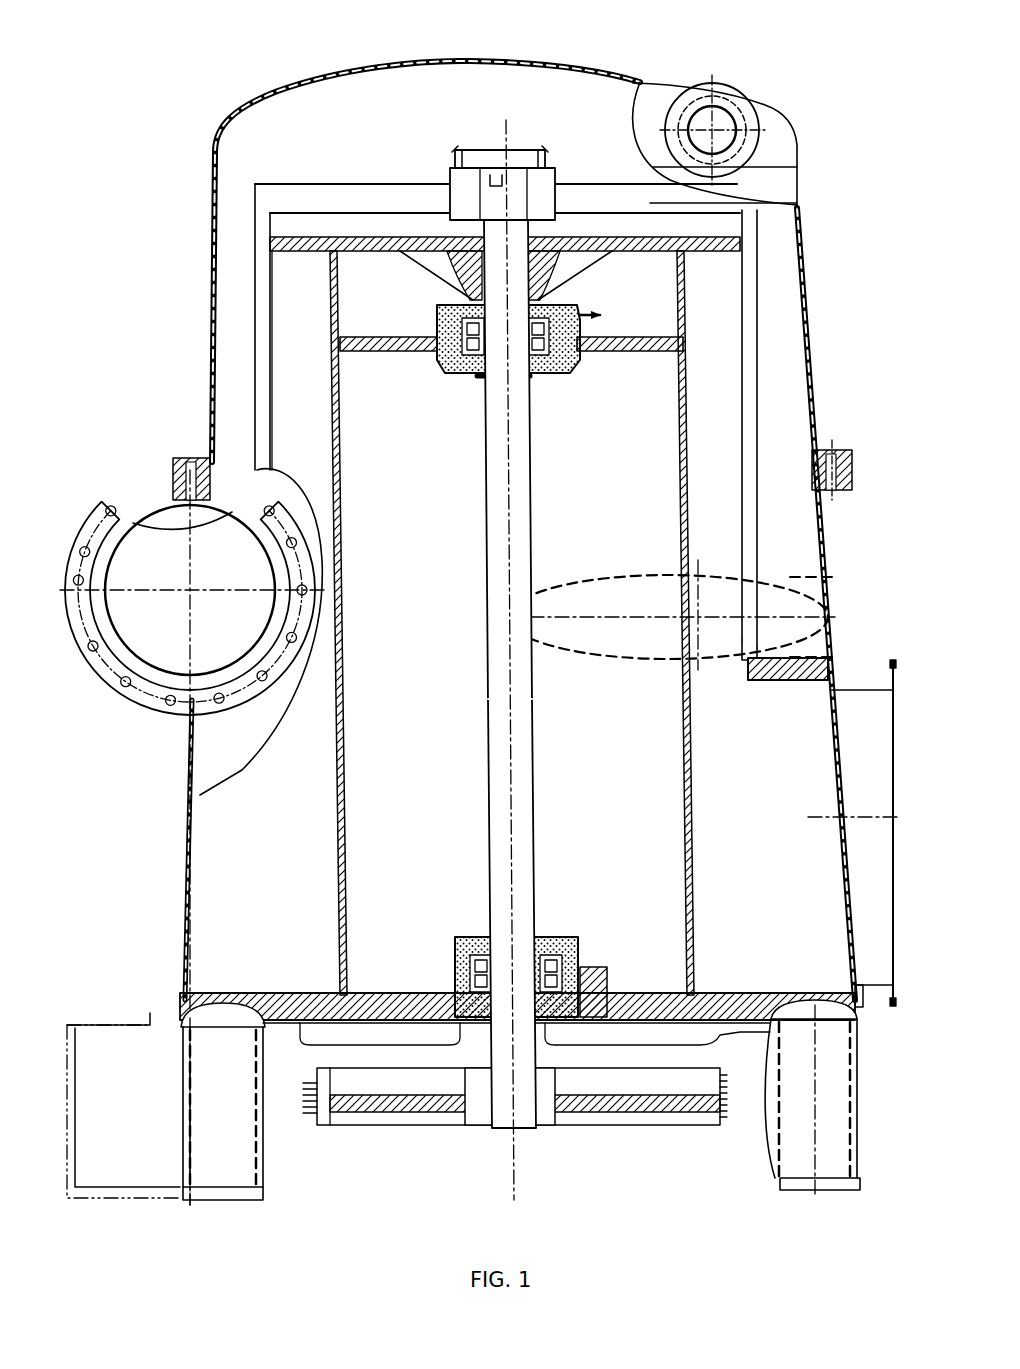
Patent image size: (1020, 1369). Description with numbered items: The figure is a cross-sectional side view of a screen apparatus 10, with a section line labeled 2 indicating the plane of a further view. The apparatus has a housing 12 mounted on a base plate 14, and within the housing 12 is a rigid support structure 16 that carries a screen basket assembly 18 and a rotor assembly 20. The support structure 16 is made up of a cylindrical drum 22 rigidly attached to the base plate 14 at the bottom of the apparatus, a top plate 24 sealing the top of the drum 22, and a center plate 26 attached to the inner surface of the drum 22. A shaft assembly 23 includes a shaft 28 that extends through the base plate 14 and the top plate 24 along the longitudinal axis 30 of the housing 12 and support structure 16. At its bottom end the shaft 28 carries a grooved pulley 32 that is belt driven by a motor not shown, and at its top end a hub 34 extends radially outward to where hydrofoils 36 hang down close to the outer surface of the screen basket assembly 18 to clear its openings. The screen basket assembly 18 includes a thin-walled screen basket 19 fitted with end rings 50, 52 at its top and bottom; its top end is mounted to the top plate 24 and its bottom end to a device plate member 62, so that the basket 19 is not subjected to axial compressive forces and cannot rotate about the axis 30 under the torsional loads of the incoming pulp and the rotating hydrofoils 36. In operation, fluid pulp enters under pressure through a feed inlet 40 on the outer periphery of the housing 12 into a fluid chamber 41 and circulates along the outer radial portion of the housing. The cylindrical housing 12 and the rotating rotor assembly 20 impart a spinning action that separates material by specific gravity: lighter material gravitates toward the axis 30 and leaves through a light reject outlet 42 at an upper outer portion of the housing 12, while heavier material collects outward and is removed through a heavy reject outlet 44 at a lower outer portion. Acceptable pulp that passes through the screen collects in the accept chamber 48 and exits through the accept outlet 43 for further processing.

The section line 2- 2 is at (288, 92).
The screen apparatus 10 is at (162, 102).
The housing 12 is at (822, 540).
The base plate 14 is at (188, 1003).
The rigid support structure 16 is at (323, 233).
The screen basket assembly 18 is at (273, 237).
The screen basket 19 is at (272, 432).
The rotor assembly 20 is at (760, 387).
The cylindrical drum 22 is at (346, 900).
The shaft assembly 23 is at (531, 512).
The top plate 24 is at (348, 254).
The center plate 26 is at (358, 352).
The shaft 28 is at (523, 803).
The longitudinal axis 30 is at (522, 1145).
The grooved pulley 32 is at (420, 1110).
The hub 34 is at (500, 155).
The hydrofoils 36 is at (757, 333).
The feed inlet 40 is at (150, 648).
The fluid chamber 41 is at (230, 420).
The light reject outlet 42 is at (722, 118).
The accept outlet 43 is at (870, 767).
The heavy reject outlet 44 is at (792, 600).
The accept chamber 48 is at (708, 452).
The end ring 50 is at (280, 258).
The end ring 52 is at (748, 684).
The device plate member 62 is at (800, 683).